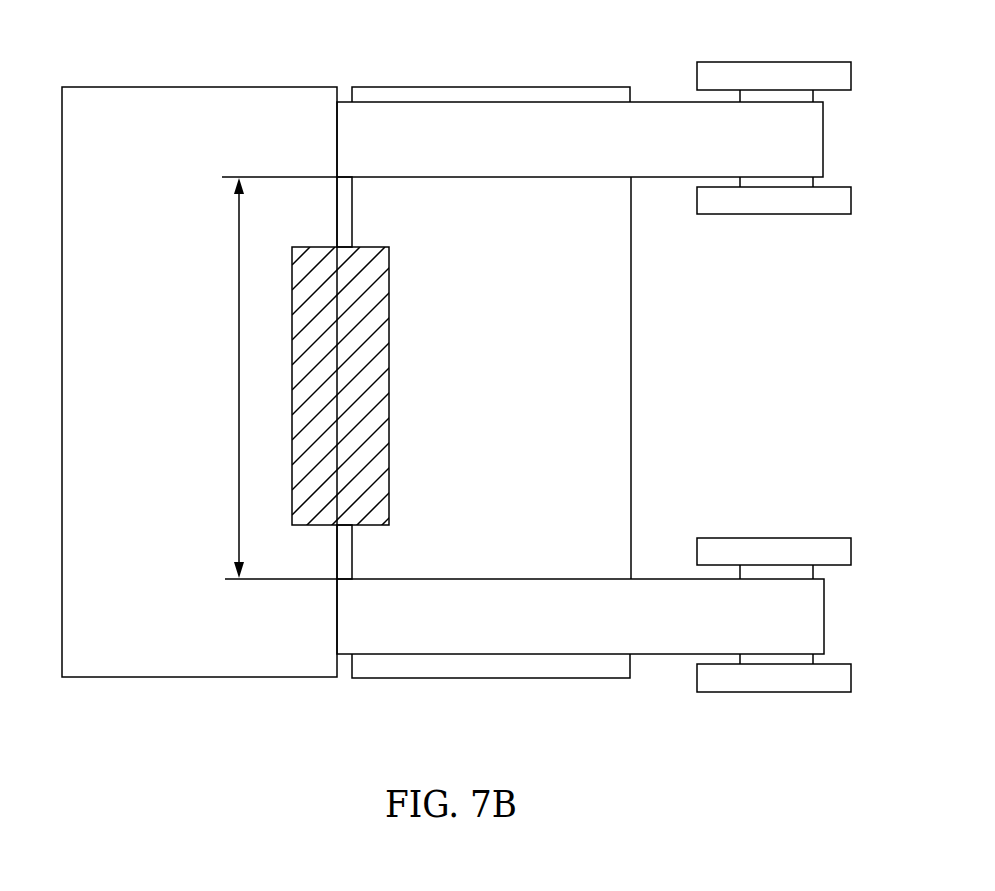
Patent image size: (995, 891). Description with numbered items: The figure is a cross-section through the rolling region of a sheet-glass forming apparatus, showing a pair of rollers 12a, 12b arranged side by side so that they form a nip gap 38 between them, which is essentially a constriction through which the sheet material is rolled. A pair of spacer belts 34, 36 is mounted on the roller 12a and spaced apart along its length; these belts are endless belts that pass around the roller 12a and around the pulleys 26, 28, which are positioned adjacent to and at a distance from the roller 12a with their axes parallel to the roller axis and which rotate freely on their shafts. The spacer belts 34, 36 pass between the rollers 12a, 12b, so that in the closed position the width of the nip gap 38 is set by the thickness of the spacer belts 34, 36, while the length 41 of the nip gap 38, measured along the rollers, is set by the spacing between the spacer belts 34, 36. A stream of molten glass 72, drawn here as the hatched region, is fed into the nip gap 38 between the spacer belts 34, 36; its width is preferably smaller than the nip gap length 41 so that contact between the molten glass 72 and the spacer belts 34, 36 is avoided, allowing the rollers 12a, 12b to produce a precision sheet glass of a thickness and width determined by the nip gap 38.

The roller 12a is at (617, 375).
The roller 12b is at (198, 105).
The pulley 26 is at (777, 72).
The pulley 28 is at (777, 679).
The spacer belt 34 is at (541, 115).
The spacer belt 36 is at (502, 640).
The nip gap 38 is at (342, 220).
The length of the nip gap 41 is at (238, 337).
The stream of molten glass 72 is at (392, 310).